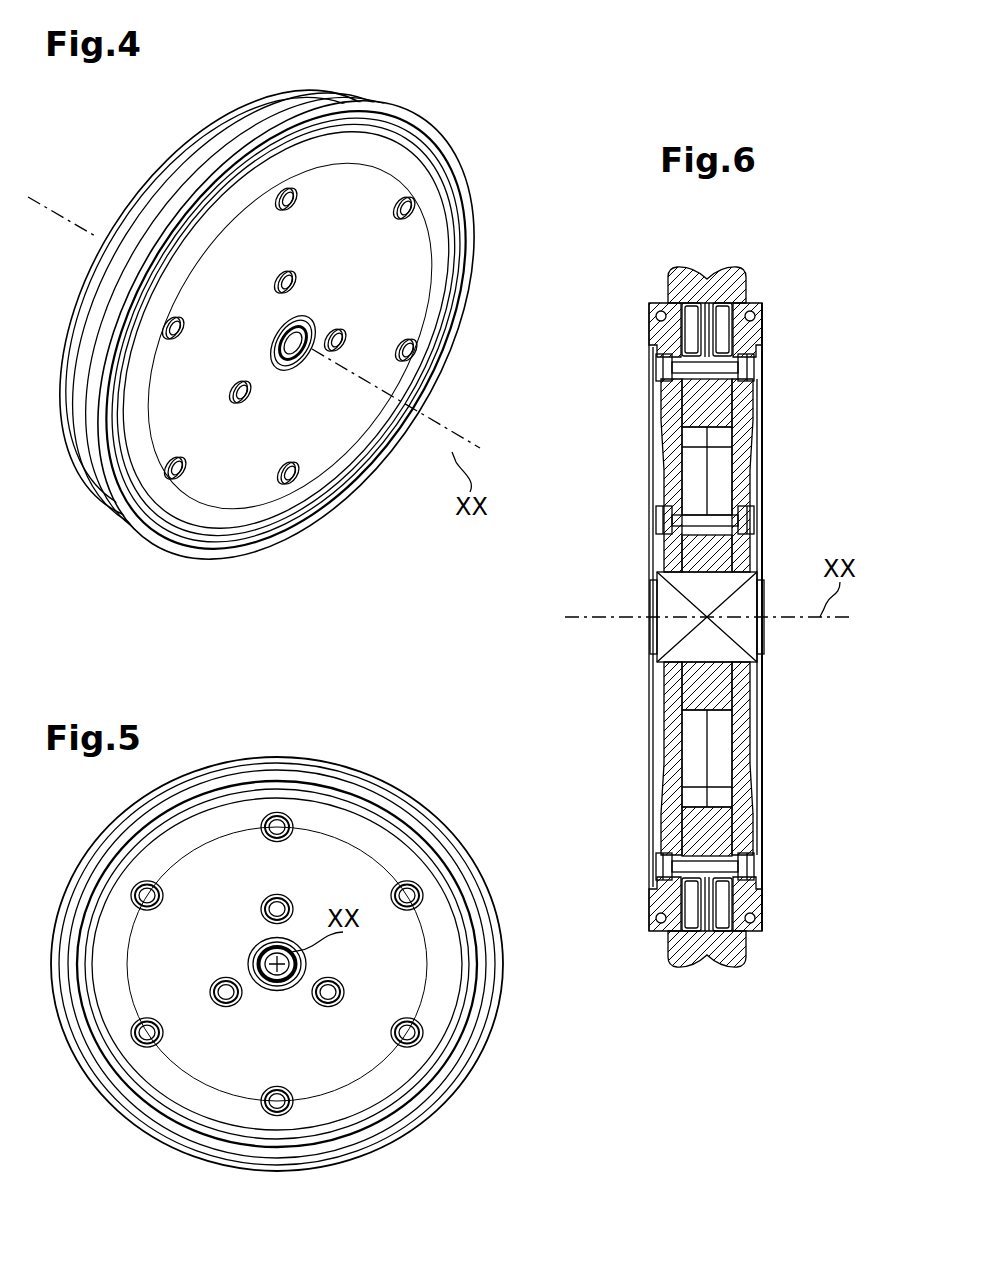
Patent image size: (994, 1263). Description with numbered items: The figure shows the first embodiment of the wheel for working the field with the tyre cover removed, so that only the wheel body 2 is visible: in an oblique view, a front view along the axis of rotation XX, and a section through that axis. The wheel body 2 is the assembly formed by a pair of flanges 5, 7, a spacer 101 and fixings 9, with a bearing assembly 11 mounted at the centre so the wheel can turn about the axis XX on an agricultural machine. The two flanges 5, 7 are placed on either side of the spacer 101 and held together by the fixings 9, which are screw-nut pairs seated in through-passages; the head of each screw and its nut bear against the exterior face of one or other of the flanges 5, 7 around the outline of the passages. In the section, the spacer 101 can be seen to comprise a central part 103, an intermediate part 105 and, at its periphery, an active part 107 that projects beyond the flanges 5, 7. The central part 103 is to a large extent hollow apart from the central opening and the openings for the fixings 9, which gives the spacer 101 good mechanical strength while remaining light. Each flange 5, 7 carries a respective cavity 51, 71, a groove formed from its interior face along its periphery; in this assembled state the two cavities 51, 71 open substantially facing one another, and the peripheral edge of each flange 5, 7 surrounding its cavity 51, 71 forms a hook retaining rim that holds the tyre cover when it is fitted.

In FIG. 4, the wheel body 2 is at (100, 166).
In FIG. 5, the wheel body 2 is at (489, 1124).
In FIG. 6, the wheel body 2 is at (677, 238).
In FIG. 4, the flange 5 is at (352, 201).
In FIG. 5, the flange 5 is at (340, 871).
In FIG. 6, the flange 5 is at (746, 432).
In FIG. 6, the flange 7 is at (667, 432).
In FIG. 4, the fixings 9 is at (291, 282).
In FIG. 5, the fixings 9 is at (397, 1044).
In FIG. 6, the fixings 9 is at (714, 523).
In FIG. 4, the bearing assembly 11 is at (311, 355).
In FIG. 5, the bearing assembly 11 is at (284, 981).
In FIG. 6, the bearing assembly 11 is at (670, 604).
In FIG. 6, the cavity 51 is at (745, 304).
In FIG. 6, the cavity 71 is at (668, 304).
In FIG. 4, the spacer 101 is at (265, 121).
In FIG. 5, the spacer 101 is at (277, 964).
In FIG. 6, the central part 103 is at (718, 471).
In FIG. 6, the intermediate part 105 is at (722, 314).
In FIG. 6, the active part 107 is at (703, 284).